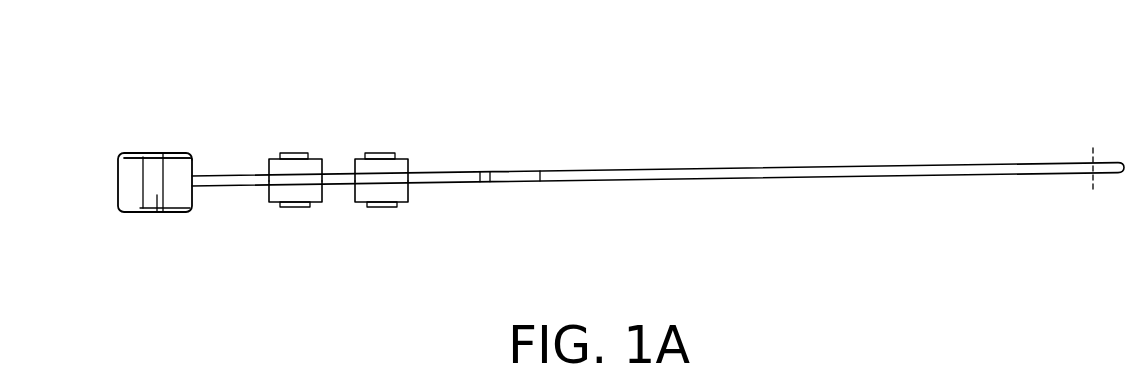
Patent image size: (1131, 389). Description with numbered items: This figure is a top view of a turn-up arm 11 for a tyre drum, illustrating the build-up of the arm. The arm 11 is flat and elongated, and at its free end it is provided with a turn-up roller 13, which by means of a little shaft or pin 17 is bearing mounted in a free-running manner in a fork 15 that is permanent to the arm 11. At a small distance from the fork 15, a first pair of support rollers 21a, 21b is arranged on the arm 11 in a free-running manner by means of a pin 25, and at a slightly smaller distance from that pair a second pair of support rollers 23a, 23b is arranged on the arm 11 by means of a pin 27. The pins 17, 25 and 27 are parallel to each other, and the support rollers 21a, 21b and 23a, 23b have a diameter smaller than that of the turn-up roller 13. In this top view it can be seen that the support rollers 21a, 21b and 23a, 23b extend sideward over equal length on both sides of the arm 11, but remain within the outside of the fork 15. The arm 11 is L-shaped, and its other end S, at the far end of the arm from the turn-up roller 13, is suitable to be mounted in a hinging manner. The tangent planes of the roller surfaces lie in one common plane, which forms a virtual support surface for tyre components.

The turn-up arm 11 is at (604, 96).
The turn-up roller 13 is at (127, 157).
The fork 15 is at (193, 157).
The pin 17 is at (157, 212).
The support roller 21a is at (323, 158).
The support roller 21b is at (300, 192).
The support roller 23a is at (410, 157).
The support roller 23b is at (403, 192).
The pin 25 is at (293, 155).
The pin 27 is at (385, 157).
The other end S is at (1095, 154).